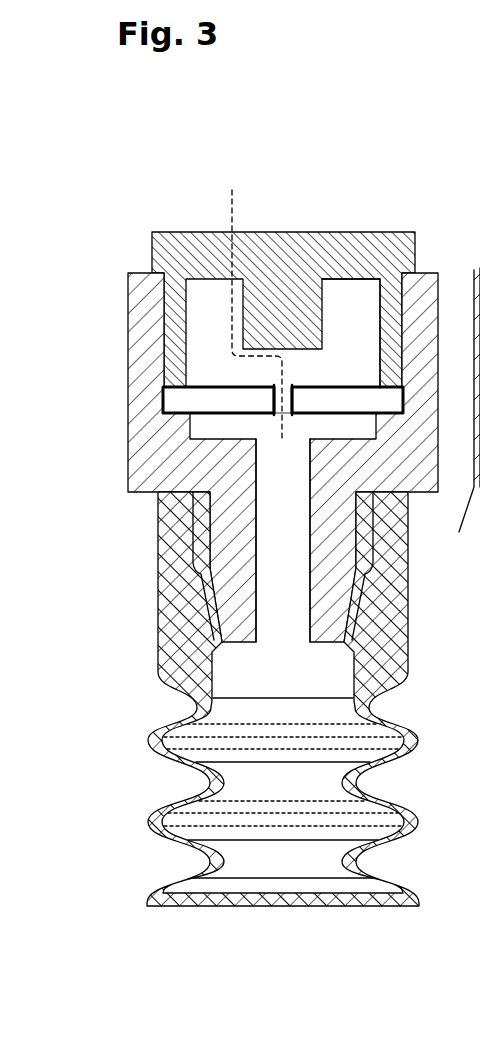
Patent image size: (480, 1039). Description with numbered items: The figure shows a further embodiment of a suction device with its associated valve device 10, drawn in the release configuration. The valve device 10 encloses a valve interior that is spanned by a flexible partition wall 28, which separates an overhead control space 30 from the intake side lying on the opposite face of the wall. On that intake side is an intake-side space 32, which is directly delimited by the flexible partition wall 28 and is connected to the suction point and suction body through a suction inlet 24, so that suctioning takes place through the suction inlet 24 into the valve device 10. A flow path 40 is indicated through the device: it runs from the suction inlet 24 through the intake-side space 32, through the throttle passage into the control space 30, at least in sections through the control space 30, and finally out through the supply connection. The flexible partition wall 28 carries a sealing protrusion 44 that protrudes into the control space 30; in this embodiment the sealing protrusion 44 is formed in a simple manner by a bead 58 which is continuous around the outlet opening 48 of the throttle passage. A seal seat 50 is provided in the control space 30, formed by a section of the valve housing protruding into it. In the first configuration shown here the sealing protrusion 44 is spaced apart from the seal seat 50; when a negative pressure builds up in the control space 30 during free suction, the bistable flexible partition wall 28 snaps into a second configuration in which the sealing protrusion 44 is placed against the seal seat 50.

The valve device 10 is at (251, 515).
The suction inlet 24 is at (277, 602).
The flexible partition wall 28 is at (180, 392).
The control space 30 is at (350, 297).
The intake-side space 32 is at (332, 425).
The flow path 40 is at (232, 230).
The sealing protrusion 44 is at (264, 380).
The outlet opening 48 is at (278, 411).
The seal seat 50 is at (296, 343).
The bead 58 is at (303, 380).